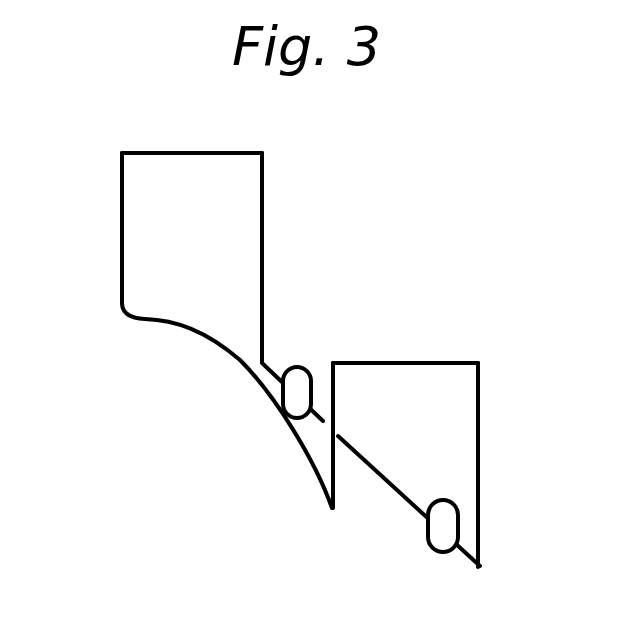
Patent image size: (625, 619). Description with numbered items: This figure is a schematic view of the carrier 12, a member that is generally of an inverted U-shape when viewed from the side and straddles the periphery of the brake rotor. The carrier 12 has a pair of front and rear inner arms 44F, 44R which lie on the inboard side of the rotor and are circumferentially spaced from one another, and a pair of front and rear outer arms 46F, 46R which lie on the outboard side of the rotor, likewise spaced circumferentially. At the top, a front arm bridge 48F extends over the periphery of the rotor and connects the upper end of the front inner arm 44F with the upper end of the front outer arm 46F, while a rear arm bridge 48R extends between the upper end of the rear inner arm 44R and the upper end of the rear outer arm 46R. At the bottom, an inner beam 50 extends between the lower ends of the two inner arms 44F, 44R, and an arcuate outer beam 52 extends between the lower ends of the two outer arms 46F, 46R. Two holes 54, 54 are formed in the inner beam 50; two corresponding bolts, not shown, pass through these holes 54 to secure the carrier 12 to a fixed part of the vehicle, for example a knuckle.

The carrier 12 is at (308, 350).
The front inner arm 44F is at (263, 212).
The rear inner arm 44R is at (478, 512).
The front outer arm 46F is at (120, 218).
The rear outer arm 46R is at (333, 457).
The front arm bridge 48F is at (168, 153).
The rear arm bridge 48R is at (418, 363).
The inner beam 50 is at (388, 484).
The outer beam 52 is at (224, 350).
The hole 54 is at (289, 367).